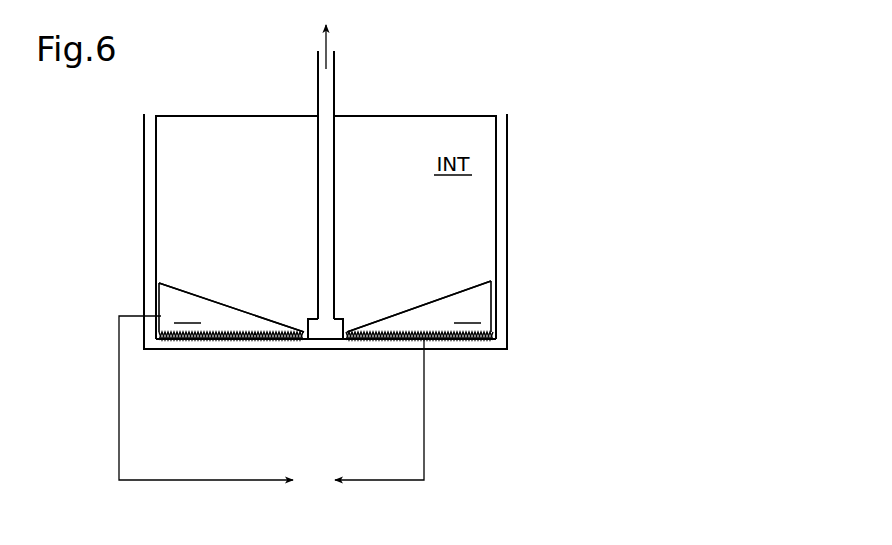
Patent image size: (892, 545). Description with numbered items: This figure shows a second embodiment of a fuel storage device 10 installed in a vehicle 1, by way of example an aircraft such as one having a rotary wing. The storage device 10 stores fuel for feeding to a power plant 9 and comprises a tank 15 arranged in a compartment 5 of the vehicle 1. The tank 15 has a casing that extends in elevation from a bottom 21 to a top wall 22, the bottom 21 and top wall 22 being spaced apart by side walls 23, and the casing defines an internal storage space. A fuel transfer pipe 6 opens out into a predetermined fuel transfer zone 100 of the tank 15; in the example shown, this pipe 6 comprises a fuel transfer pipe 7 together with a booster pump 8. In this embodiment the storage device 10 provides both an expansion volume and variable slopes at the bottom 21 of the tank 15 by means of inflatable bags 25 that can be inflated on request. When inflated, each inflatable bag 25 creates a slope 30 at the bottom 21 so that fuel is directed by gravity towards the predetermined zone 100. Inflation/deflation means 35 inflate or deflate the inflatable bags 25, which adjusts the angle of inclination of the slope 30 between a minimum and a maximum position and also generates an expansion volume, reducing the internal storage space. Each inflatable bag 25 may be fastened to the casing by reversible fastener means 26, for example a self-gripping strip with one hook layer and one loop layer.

The vehicle 1 is at (608, 96).
The compartment 5 is at (506, 311).
The fuel transfer pipe 6 is at (347, 99).
The fuel transfer pipe 7 is at (333, 210).
The booster pump 8 is at (343, 318).
The power plant 9 is at (325, 38).
The storage device 10 is at (567, 223).
The tank 15 is at (153, 208).
The bottom 21 is at (310, 350).
The top wall 22 is at (212, 115).
The side walls 23 is at (497, 163).
The inflatable bag 25 is at (325, 306).
The reversible fastener means 26 is at (207, 341).
The slope 30 is at (229, 290).
The inflation/deflation means 35 is at (271, 404).
The predetermined fuel transfer zone 100 is at (300, 305).